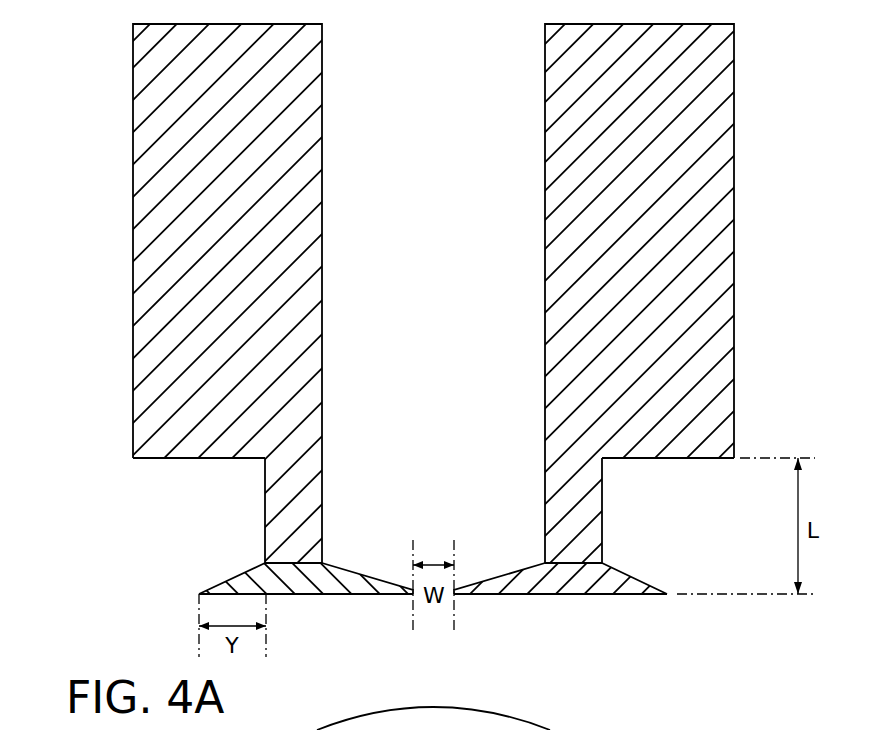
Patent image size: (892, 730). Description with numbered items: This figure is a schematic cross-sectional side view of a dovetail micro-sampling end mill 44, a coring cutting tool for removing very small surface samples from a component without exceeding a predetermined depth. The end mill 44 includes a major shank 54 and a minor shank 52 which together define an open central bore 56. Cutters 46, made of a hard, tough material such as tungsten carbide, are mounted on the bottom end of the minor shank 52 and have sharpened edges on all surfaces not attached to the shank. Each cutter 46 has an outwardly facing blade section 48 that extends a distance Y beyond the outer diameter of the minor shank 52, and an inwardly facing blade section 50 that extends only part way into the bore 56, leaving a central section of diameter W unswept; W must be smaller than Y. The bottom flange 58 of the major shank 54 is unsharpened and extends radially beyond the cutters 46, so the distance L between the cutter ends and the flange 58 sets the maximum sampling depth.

The micro-sampling end mill 44 is at (763, 66).
The cutters 46 is at (210, 590).
The outwardly facing blade section 48 is at (235, 576).
The inwardly facing blade section 50 is at (372, 570).
The minor shank 52 is at (588, 502).
The major shank 54 is at (147, 202).
The central bore 56 is at (439, 273).
The bottom flange 58 is at (183, 459).